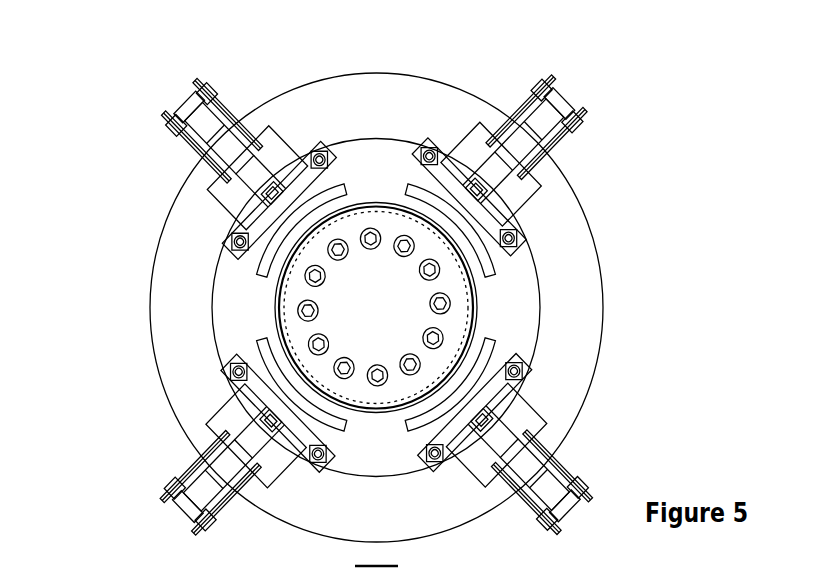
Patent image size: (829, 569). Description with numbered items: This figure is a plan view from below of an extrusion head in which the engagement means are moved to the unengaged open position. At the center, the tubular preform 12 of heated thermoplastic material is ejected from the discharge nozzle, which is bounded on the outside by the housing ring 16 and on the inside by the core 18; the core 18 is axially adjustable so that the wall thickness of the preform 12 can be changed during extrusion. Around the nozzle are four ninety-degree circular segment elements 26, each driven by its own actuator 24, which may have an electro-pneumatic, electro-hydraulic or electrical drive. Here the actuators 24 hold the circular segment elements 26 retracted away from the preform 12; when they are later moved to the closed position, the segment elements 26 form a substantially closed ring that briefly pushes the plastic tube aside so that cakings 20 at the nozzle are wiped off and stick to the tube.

The tubular preform 12 is at (480, 317).
The housing ring 16 is at (237, 307).
The core 18 is at (386, 258).
The cakings 20 is at (477, 305).
The actuator 24 is at (552, 160).
The circular segment element 26 is at (515, 400).